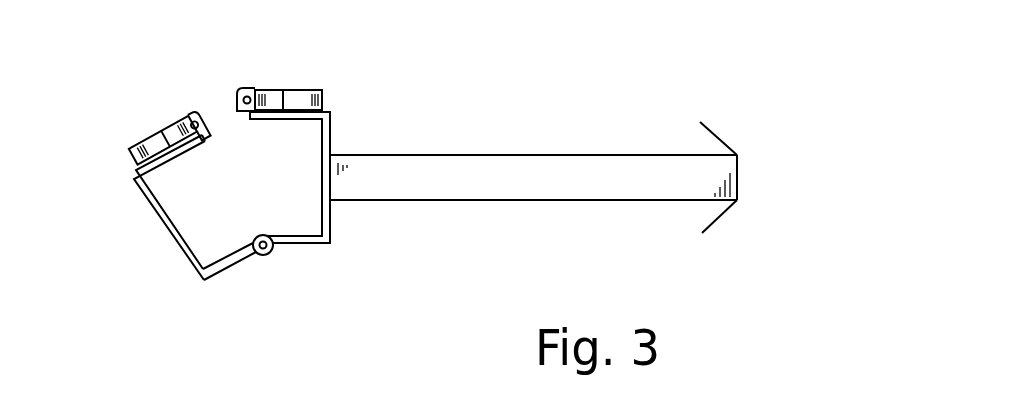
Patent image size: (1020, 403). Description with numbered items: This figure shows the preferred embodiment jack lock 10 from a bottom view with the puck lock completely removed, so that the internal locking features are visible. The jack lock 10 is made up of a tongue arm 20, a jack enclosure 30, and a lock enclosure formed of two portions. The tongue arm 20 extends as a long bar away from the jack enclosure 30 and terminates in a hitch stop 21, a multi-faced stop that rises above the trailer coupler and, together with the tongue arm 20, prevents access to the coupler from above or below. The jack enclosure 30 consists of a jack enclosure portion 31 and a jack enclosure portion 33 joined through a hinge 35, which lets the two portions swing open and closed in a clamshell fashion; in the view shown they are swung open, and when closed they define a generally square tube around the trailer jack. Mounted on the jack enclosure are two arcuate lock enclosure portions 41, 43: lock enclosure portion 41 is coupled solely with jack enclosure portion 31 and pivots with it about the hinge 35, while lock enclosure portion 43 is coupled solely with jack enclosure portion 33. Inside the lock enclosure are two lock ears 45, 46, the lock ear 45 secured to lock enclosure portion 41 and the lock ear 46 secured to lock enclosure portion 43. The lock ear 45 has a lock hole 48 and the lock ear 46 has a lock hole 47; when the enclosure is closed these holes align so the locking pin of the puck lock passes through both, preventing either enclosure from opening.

The jack lock 10 is at (420, 253).
The tongue arm 20 is at (587, 148).
The hitch stop 21 is at (720, 215).
The jack enclosure 30 is at (183, 257).
The jack enclosure portion 31 is at (197, 270).
The jack enclosure portion 33 is at (327, 147).
The hinge 35 is at (270, 255).
The lock enclosure portion 41 is at (135, 155).
The lock enclosure portion 43 is at (322, 90).
The lock ear 45 is at (181, 115).
The lock ear 46 is at (243, 88).
The lock hole 47 is at (253, 92).
The lock hole 48 is at (194, 117).